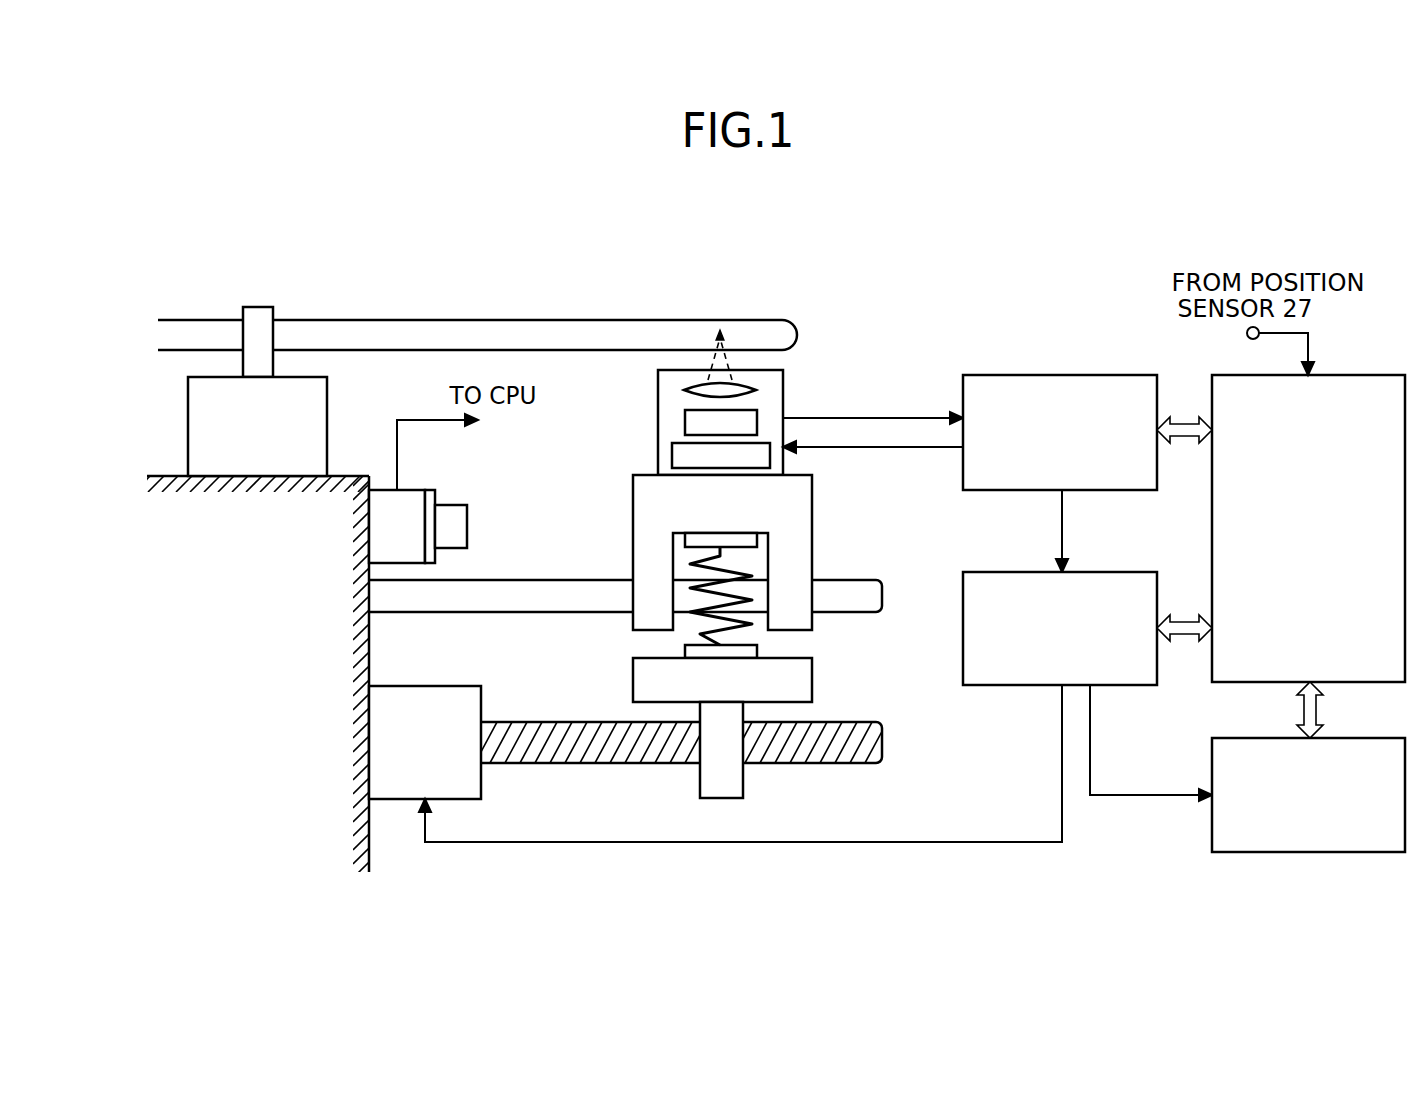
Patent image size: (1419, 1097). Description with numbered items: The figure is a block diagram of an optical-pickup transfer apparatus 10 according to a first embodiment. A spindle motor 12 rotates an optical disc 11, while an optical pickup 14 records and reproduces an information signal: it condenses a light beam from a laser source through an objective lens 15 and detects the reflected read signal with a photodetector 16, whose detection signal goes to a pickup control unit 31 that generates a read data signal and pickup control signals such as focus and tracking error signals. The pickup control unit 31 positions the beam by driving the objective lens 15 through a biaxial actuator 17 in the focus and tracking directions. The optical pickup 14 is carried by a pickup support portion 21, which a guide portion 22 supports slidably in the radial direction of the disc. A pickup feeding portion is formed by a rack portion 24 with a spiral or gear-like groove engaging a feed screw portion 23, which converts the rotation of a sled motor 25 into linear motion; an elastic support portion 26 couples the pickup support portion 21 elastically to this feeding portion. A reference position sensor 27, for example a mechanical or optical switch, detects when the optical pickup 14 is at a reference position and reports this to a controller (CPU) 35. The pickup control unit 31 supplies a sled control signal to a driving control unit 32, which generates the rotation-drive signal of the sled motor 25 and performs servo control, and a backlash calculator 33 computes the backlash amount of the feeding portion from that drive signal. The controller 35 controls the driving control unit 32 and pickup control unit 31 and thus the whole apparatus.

The optical-pickup transfer apparatus 10 is at (1135, 253).
The optical disc 11 is at (799, 336).
The spindle motor 12 is at (329, 407).
The optical pickup 14 is at (720, 402).
The objective lens 15 is at (680, 385).
The photodetector 16 is at (680, 420).
The biaxial actuator 17 is at (670, 455).
The pickup support portion 21 is at (814, 520).
The guide portion 22 is at (553, 574).
The feed screw portion 23 is at (513, 722).
The rack portion 24 is at (814, 674).
The sled motor 25 is at (432, 686).
The elastic support portion 26 is at (693, 616).
The reference position sensor 27 is at (430, 490).
The pickup control unit 31 is at (1010, 375).
The driving control unit 32 is at (1010, 572).
The backlash calculator 33 is at (1212, 766).
The controller (CPU) 35 is at (1357, 375).